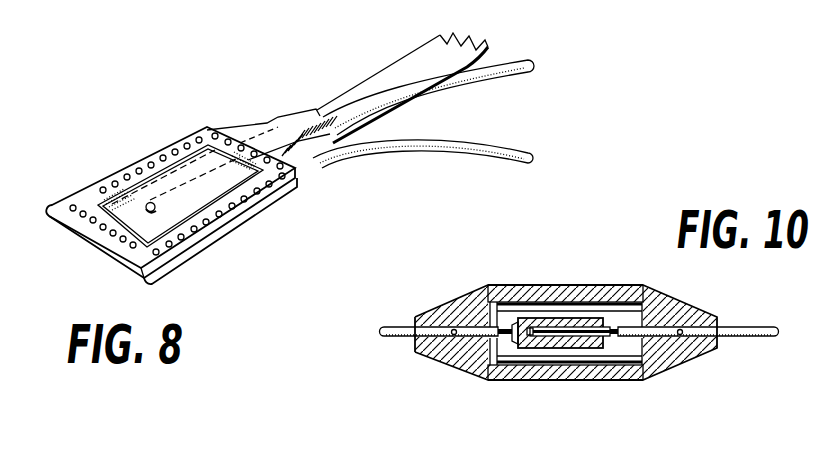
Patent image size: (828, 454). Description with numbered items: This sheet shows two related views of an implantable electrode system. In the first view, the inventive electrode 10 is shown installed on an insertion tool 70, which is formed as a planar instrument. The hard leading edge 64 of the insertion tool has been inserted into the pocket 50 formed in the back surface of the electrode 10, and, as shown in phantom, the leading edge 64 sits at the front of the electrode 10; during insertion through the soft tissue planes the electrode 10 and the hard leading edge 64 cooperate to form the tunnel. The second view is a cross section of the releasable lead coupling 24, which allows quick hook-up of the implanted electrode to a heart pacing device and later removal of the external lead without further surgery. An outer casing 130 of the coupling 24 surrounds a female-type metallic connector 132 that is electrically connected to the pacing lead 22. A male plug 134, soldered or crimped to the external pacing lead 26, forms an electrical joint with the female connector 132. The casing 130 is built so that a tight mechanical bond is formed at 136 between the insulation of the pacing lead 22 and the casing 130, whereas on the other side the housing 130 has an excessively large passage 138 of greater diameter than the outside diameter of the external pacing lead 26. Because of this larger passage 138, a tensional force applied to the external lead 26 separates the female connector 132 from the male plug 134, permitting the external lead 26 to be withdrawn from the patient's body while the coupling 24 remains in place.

In FIG. 8, the electrode 10 is at (154, 138).
In FIG. 8, the pocket 50 is at (200, 251).
In FIG. 8, the leading edge 64 is at (97, 200).
In FIG. 8, the insertion tool 70 is at (397, 67).
In FIG. 10, the pacing lead 22 is at (393, 337).
In FIG. 10, the releasable lead coupling 24 is at (561, 265).
In FIG. 10, the external pacing lead 26 is at (747, 328).
In FIG. 10, the outer casing 130 is at (613, 287).
In FIG. 10, the female-type metallic connector 132 is at (537, 350).
In FIG. 10, the male plug 134 is at (610, 348).
In FIG. 10, the tight mechanical bond 136 is at (455, 337).
In FIG. 10, the excessively large passage 138 is at (677, 357).